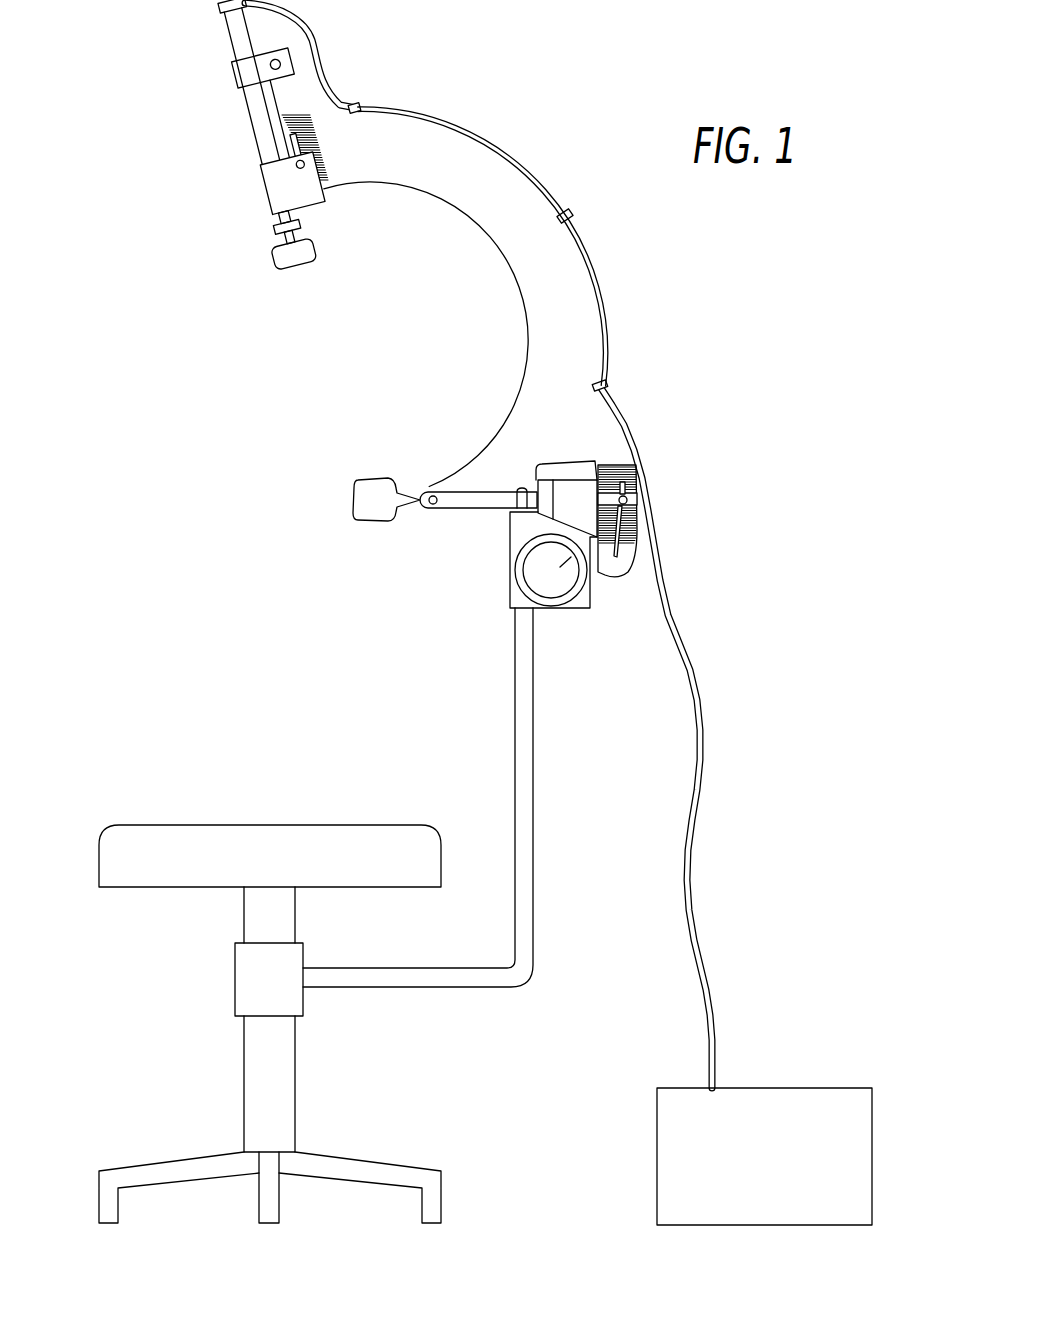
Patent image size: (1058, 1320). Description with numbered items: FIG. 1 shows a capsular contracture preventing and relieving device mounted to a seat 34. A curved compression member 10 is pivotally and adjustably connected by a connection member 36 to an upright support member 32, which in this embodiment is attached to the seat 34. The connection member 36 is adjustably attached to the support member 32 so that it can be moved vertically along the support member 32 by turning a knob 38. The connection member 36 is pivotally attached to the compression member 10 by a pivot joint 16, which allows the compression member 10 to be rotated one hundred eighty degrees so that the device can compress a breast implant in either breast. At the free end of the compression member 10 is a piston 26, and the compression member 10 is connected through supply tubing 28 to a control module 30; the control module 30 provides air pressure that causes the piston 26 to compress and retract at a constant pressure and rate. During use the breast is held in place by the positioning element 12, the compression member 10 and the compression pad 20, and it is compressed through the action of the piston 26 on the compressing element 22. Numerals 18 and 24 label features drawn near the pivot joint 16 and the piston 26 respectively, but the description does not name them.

The compression member 10 is at (562, 293).
The positioning element 12 is at (370, 497).
The pivot joint 16 is at (567, 505).
The adjustment rack 18 is at (628, 500).
The compression pad 20 is at (296, 265).
The compressing element 22 is at (185, 142).
The slide block 24 is at (300, 165).
The piston 26 is at (237, 38).
The supply tubing 28 is at (313, 34).
The control module 30 is at (795, 1088).
The support member 32 is at (535, 800).
The seat 34 is at (212, 825).
The connection member 36 is at (520, 527).
The knob 38 is at (557, 573).